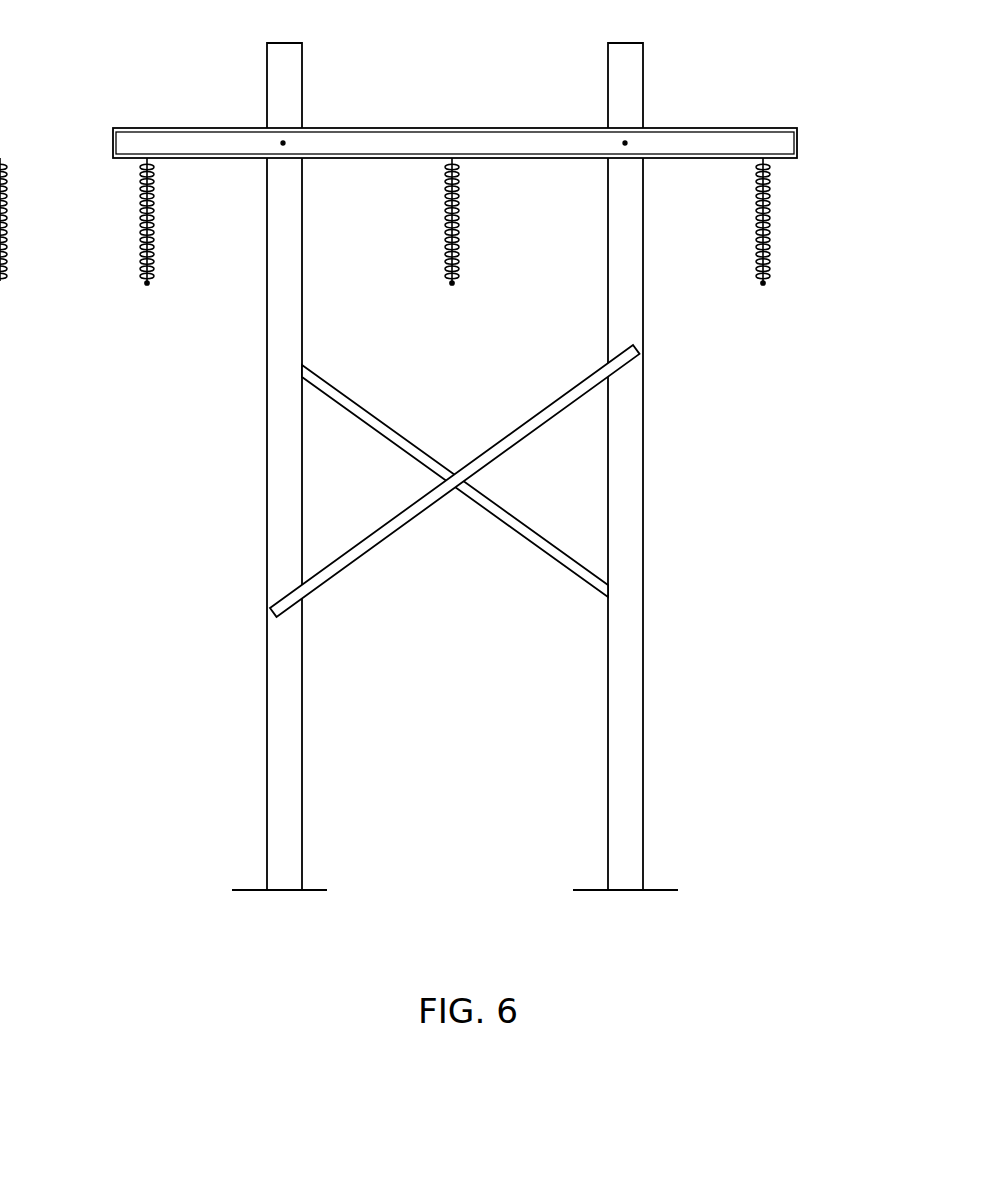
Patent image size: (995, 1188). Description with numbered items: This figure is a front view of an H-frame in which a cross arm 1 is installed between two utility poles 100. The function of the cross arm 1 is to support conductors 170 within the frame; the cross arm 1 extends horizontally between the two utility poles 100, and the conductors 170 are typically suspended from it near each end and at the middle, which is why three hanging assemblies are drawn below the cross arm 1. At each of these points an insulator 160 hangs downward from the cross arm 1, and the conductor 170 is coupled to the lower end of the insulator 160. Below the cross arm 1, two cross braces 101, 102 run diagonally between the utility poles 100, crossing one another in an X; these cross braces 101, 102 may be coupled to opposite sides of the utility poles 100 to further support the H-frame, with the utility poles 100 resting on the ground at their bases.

The cross arm 1 is at (720, 128).
The utility pole 100 is at (275, 758).
The cross brace 101 is at (398, 530).
The cross brace 102 is at (378, 417).
The insulator 160 is at (130, 215).
The conductor 170 is at (148, 284).